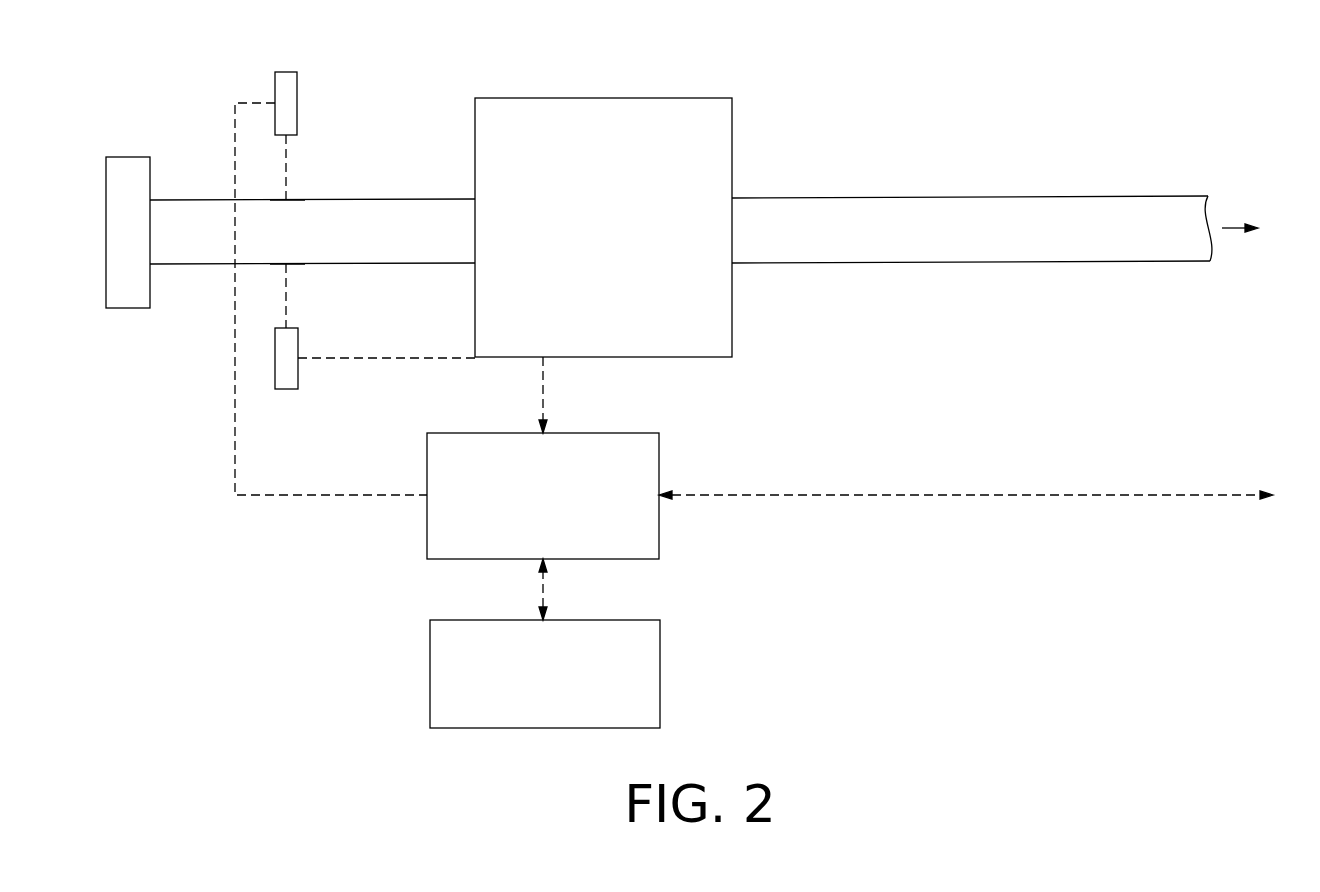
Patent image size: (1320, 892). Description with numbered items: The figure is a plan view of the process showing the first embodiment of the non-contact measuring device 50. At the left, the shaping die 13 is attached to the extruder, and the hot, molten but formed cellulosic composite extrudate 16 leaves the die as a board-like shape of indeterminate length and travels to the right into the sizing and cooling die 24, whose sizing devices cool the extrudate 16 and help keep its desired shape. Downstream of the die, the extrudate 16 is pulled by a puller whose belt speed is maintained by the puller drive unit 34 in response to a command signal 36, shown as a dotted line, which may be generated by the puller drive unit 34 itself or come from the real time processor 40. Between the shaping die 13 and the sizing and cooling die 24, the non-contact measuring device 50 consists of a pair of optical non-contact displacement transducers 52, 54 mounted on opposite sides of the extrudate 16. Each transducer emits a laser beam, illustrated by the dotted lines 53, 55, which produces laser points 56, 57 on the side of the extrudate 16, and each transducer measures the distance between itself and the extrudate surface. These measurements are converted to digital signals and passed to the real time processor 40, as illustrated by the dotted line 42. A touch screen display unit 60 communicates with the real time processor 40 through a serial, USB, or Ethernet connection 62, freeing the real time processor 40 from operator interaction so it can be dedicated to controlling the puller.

The shaping die 13 is at (129, 345).
The cellulosic composite extrudate 16 is at (995, 229).
The sizing and cooling die 24 is at (603, 227).
The puller drive unit 34 is at (1285, 495).
The command signal 36 is at (963, 494).
The real time processor 40 is at (543, 496).
The signal path to real time processor 42 is at (409, 357).
The non-contact measuring device 50 is at (298, 239).
The non-contact displacement transducer 52 is at (275, 87).
The light beam 53 is at (287, 158).
The non-contact displacement transducer 54 is at (287, 389).
The light beam 55 is at (283, 302).
The laser point 56 is at (287, 198).
The laser point 57 is at (286, 266).
The touch screen display unit 60 is at (545, 674).
The connection 62 is at (545, 593).